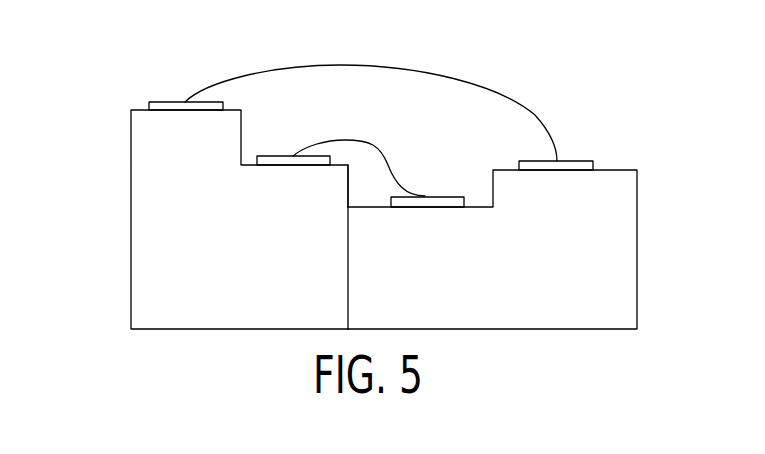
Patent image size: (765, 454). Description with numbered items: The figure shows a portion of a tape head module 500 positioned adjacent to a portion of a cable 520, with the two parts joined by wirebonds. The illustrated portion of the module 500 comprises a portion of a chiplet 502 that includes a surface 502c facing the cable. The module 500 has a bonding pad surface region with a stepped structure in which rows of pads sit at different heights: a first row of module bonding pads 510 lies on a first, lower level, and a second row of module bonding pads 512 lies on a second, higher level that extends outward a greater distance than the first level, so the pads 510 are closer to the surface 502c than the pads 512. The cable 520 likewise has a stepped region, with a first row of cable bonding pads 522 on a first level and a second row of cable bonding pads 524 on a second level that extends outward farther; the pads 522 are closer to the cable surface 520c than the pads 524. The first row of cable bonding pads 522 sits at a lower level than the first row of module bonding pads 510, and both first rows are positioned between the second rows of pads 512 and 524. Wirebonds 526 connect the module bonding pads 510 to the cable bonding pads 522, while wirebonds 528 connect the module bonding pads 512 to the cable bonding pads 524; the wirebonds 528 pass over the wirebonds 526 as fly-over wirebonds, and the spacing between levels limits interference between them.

The tape head module 500 is at (130, 278).
The chiplet 502 is at (262, 260).
The chiplet surface 502c is at (347, 192).
The first row of module bonding pads 510 is at (280, 156).
The second row of module bonding pads 512 is at (163, 102).
The cable 520 is at (638, 272).
The cable surface 520c is at (349, 292).
The first row of cable bonding pads 522 is at (450, 197).
The second row of cable bonding pads 524 is at (579, 161).
The wirebonds 526 is at (358, 140).
The wirebonds 528 is at (483, 82).